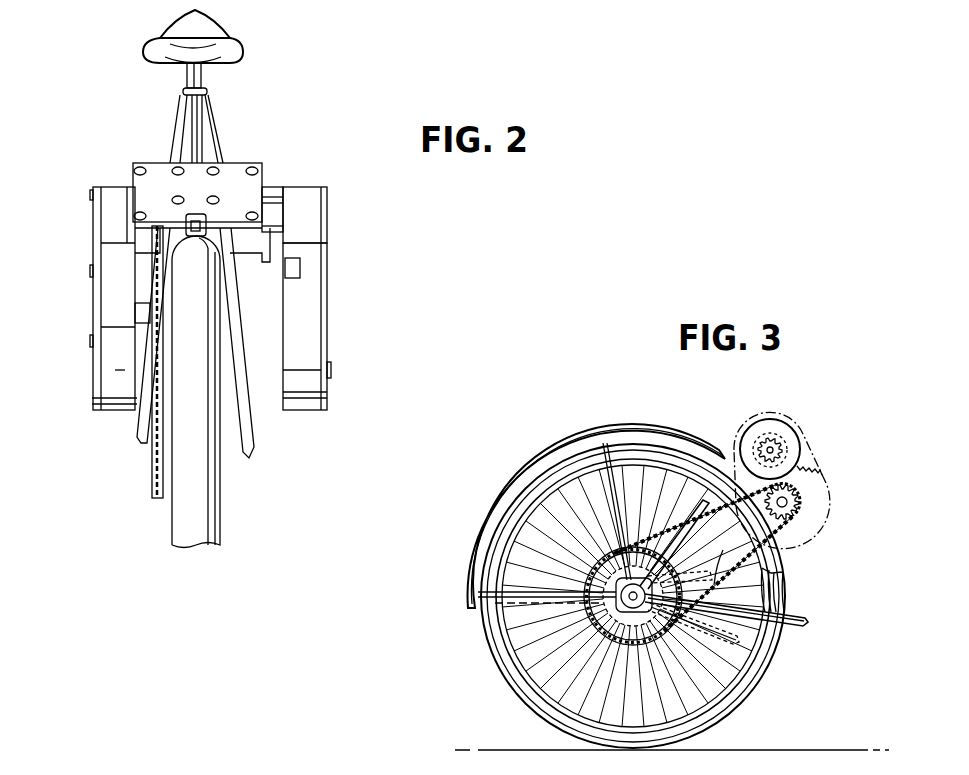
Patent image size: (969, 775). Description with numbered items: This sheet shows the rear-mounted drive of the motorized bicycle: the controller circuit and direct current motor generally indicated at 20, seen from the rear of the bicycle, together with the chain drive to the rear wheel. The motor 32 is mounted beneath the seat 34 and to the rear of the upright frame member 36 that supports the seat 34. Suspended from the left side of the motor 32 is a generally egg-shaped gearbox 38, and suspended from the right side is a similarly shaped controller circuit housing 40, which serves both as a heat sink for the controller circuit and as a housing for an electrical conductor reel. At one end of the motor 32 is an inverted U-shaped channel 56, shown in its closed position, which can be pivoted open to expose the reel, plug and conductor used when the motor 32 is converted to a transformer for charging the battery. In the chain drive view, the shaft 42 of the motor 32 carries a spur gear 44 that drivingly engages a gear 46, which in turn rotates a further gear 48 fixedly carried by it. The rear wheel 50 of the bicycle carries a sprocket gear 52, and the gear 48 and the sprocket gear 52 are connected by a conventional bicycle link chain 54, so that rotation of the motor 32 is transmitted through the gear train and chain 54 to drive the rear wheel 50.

In FIG. 2, the controller circuit and direct current motor 20 is at (325, 160).
In FIG. 2, the motor 32 is at (250, 187).
In FIG. 3, the motor 32 is at (782, 432).
In FIG. 2, the seat 34 is at (228, 40).
In FIG. 2, the seat supporting frame member 36 is at (203, 108).
In FIG. 2, the gearbox 38 is at (97, 292).
In FIG. 2, the controller circuit housing 40 is at (318, 337).
In FIG. 3, the shaft 42 is at (775, 450).
In FIG. 3, the spur gear 44 is at (743, 447).
In FIG. 3, the gear 46 is at (813, 499).
In FIG. 3, the gear 48 is at (790, 508).
In FIG. 3, the rear wheel 50 is at (763, 684).
In FIG. 3, the sprocket gear 52 is at (675, 557).
In FIG. 2, the link chain 54 is at (154, 476).
In FIG. 3, the link chain 54 is at (750, 562).
In FIG. 2, the inverted U-shaped channel 56 is at (322, 220).